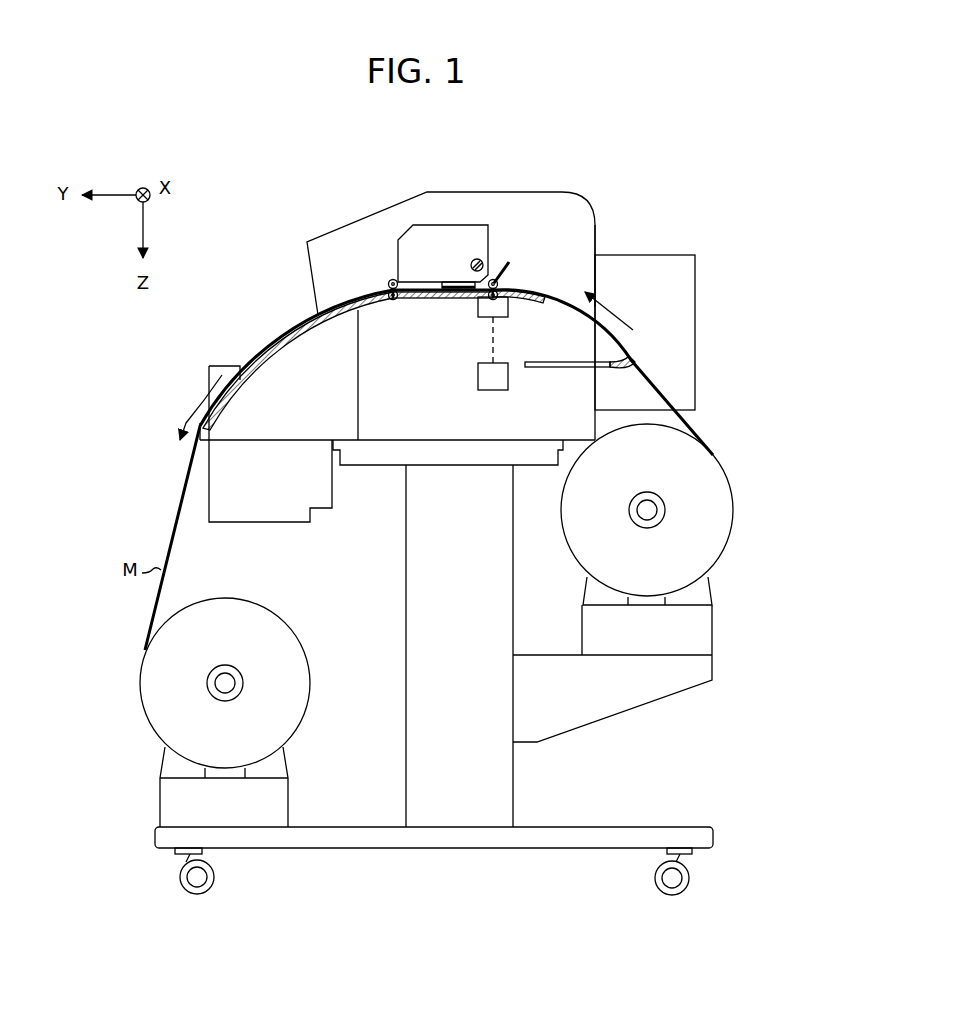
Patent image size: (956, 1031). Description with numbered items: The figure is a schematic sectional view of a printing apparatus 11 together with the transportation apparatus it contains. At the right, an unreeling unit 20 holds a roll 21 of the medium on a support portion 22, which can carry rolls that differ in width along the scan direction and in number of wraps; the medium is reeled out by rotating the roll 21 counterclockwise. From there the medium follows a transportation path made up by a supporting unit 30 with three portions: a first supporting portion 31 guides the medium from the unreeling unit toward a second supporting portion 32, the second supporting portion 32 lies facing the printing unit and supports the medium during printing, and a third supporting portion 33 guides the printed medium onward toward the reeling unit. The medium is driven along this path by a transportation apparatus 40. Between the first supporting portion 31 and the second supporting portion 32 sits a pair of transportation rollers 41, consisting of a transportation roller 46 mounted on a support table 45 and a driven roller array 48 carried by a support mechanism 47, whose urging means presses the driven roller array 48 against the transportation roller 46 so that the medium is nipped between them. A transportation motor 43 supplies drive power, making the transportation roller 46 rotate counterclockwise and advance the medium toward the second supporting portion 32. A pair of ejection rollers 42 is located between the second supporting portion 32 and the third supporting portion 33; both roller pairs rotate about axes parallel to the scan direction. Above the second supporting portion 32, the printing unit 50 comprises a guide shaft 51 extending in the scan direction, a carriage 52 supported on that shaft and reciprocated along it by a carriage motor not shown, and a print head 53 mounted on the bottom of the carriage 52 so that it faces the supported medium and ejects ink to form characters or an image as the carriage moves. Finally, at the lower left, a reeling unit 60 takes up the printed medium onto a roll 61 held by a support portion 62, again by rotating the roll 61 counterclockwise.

The printing apparatus 11 is at (659, 86).
The unreeling unit 20 is at (727, 470).
The roll 21 is at (735, 508).
The support portion 22 is at (710, 583).
The supporting unit 30 is at (637, 363).
The first supporting portion 31 is at (607, 337).
The second supporting portion 32 is at (455, 300).
The third supporting portion 33 is at (227, 403).
The transportation apparatus 40 is at (530, 386).
The pair of transportation rollers 41 is at (558, 230).
The pair of ejection rollers 42 is at (376, 281).
The transportation motor 43 is at (493, 391).
The support table 45 is at (509, 308).
The transportation roller 46 is at (510, 292).
The support mechanism 47 is at (500, 262).
The driven roller array 48 is at (500, 280).
The printing unit 50 is at (414, 208).
The guide shaft 51 is at (471, 261).
The carriage 52 is at (462, 225).
The print head 53 is at (440, 283).
The reeling unit 60 is at (139, 674).
The roll 61 is at (227, 596).
The support portion 62 is at (164, 757).